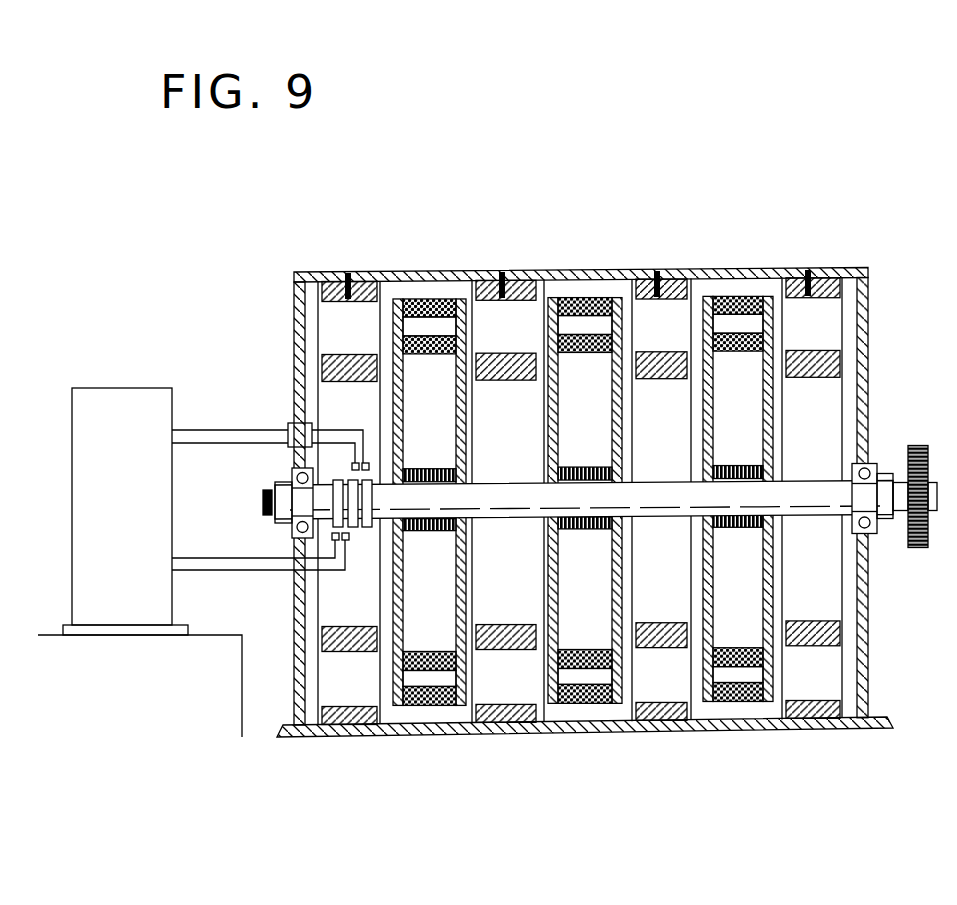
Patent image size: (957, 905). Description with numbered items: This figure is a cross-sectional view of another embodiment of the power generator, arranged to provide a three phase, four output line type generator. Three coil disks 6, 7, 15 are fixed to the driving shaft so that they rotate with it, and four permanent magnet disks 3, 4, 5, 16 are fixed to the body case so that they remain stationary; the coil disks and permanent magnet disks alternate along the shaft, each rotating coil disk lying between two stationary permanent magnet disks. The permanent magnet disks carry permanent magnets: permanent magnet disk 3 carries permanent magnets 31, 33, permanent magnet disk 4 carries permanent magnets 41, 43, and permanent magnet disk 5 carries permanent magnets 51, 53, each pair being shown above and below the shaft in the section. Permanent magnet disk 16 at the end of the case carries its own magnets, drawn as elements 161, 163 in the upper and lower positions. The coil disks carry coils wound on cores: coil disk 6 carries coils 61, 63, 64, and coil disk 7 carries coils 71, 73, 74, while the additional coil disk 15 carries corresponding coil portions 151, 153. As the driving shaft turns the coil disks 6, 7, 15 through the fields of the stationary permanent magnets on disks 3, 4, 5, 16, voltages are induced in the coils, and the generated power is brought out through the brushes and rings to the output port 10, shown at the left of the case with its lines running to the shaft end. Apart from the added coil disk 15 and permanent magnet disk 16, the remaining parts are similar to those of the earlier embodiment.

The permanent magnet disk 3 is at (838, 507).
The permanent magnet 31 is at (828, 329).
The permanent magnet 33 is at (825, 679).
The permanent magnet disk 4 is at (736, 457).
The permanent magnet 41 is at (649, 318).
The permanent magnet 43 is at (660, 696).
The permanent magnet disk 5 is at (585, 506).
The permanent magnet 51 is at (492, 320).
The permanent magnet 53 is at (509, 695).
The coil disk 6 is at (739, 448).
The coil 61 is at (739, 356).
The coil 63 is at (745, 703).
The coil 64 is at (740, 536).
The coil disk 7 is at (585, 510).
The coil 71 is at (583, 360).
The coil 73 is at (592, 704).
The coil 74 is at (592, 536).
The output port 10 is at (110, 402).
The coil disk 15 is at (426, 524).
The stator winding 151 is at (428, 359).
The lower stator portion 153 is at (430, 709).
The permanent magnet disk 16 is at (329, 278).
The upper spacer block 161 is at (335, 320).
The lower spacer block 163 is at (351, 695).